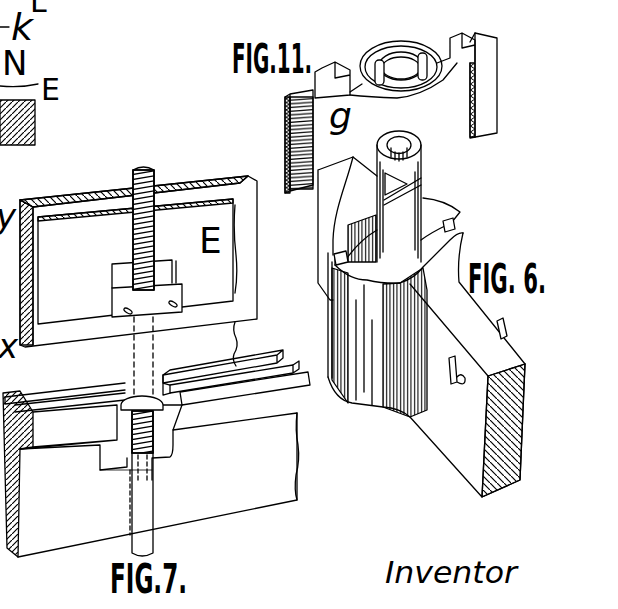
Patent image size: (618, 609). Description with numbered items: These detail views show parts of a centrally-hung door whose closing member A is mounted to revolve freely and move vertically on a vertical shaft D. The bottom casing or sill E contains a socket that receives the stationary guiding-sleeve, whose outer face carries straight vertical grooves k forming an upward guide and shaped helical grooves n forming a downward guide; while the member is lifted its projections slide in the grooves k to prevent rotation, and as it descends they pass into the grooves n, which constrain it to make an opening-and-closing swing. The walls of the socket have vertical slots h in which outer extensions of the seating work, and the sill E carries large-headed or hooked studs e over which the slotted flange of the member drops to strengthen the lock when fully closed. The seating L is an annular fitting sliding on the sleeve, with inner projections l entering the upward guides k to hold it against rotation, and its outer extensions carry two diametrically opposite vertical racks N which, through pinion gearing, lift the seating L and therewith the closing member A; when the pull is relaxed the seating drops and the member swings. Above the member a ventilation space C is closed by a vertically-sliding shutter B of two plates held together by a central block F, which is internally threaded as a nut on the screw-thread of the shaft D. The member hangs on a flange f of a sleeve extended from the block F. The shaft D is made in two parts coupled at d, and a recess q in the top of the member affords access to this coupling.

In FIG. 7, the closing member A is at (156, 464).
In FIG. 7, the shutter B is at (247, 222).
In FIG. 7, the space C is at (250, 344).
In FIG. 7, the vertical shaft D is at (134, 175).
In FIG. 6, the sill E is at (426, 347).
In FIG. 7, the central block F is at (163, 306).
In FIG. 7, the flange f is at (162, 408).
In FIG. 7, the recess q is at (107, 456).
In FIG. 7, the coupling d is at (152, 480).
In FIG. 6, the straight vertical grooves k is at (378, 153).
In FIG. 6, the helical or inclined grooves n is at (417, 183).
In FIG. 6, the vertical slots h is at (334, 257).
In FIG. 6, the hooked studs e is at (508, 330).
In FIG. 11, the vertical racks N is at (285, 146).
In FIG. 11, the seating L is at (367, 57).
In FIG. 11, the inner projections l is at (379, 60).